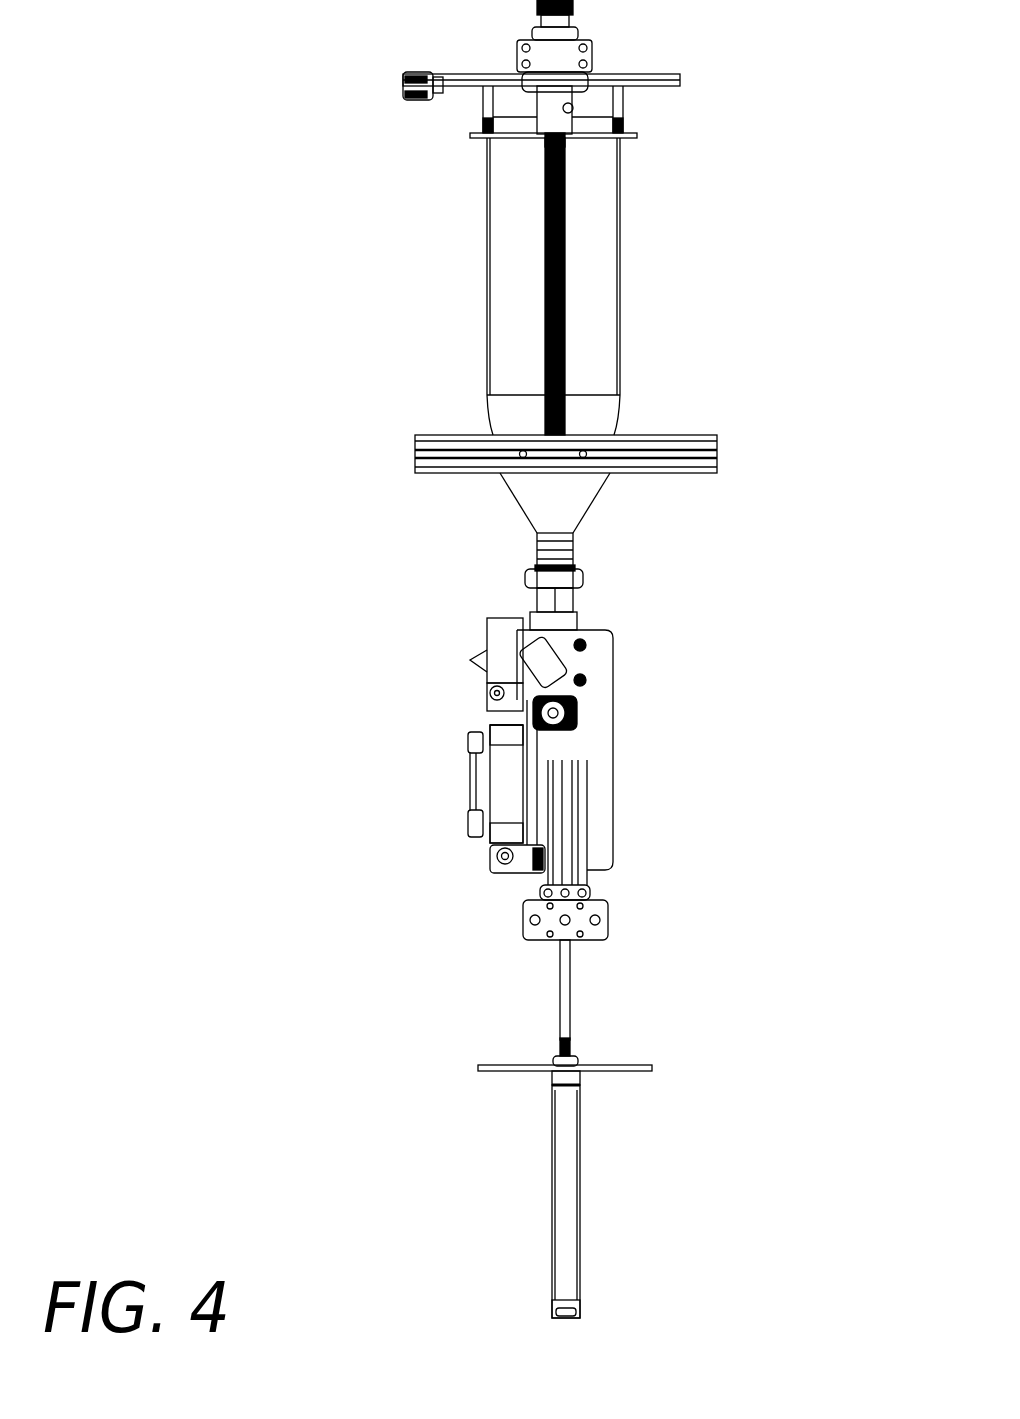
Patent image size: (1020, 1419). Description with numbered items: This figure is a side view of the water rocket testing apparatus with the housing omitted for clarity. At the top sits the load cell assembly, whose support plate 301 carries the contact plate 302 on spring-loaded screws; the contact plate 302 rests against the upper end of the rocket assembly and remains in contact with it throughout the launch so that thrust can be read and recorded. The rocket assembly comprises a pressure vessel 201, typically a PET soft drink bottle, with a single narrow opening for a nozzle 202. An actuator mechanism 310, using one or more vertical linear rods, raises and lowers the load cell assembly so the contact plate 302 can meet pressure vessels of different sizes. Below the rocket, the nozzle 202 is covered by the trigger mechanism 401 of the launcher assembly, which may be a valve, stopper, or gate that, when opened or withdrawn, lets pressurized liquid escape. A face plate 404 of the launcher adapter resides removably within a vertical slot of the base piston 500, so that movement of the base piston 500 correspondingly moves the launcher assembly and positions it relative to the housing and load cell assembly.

The support plate 301 is at (681, 67).
The contact plate 302 is at (630, 181).
The pressure vessel 201 is at (474, 286).
The actuator mechanism 310 is at (706, 286).
The nozzle 202 is at (665, 551).
The trigger mechanism 401 is at (367, 629).
The face plate 404 is at (655, 785).
The base piston 500 is at (678, 1129).